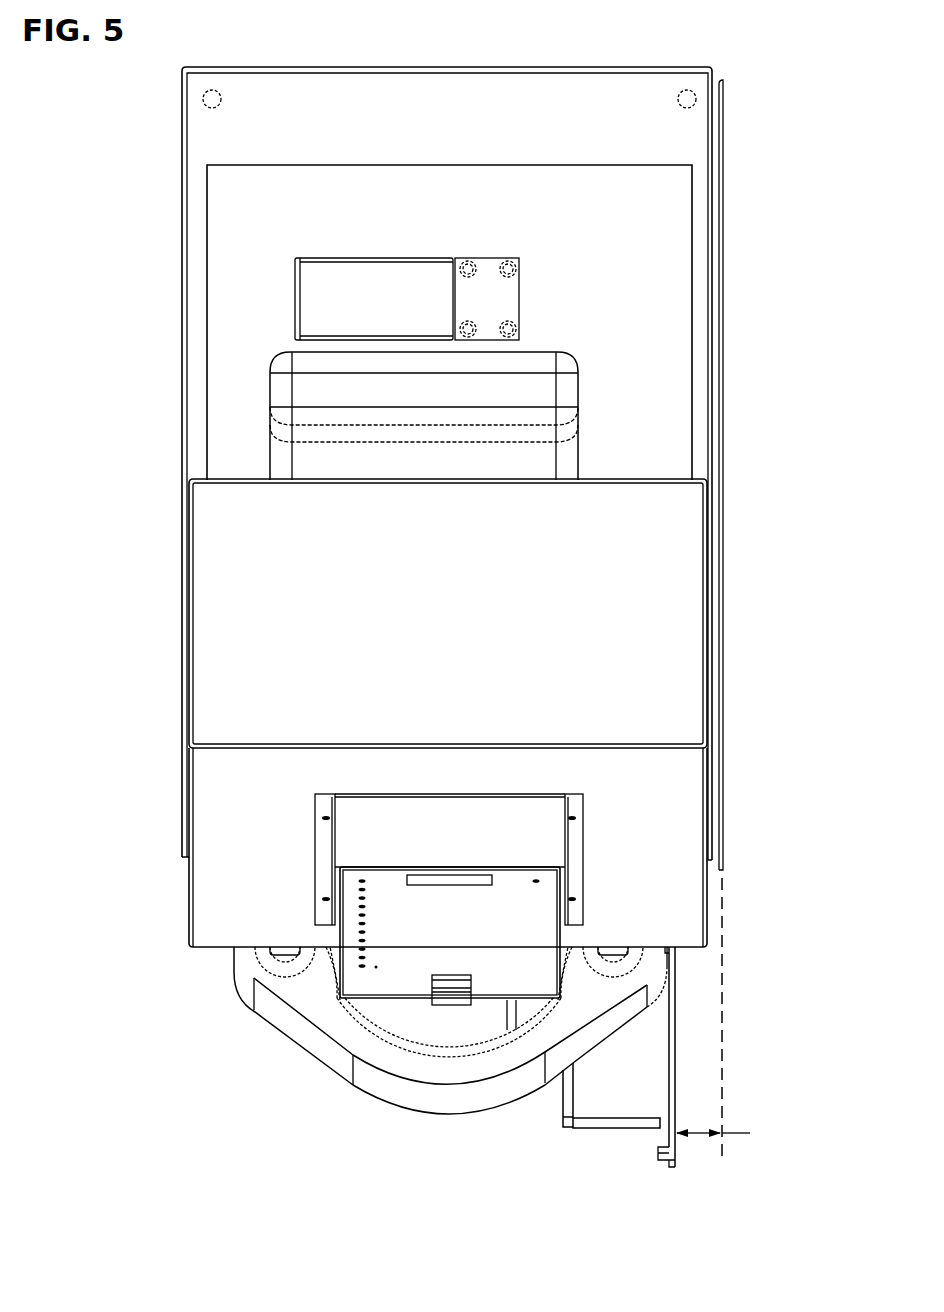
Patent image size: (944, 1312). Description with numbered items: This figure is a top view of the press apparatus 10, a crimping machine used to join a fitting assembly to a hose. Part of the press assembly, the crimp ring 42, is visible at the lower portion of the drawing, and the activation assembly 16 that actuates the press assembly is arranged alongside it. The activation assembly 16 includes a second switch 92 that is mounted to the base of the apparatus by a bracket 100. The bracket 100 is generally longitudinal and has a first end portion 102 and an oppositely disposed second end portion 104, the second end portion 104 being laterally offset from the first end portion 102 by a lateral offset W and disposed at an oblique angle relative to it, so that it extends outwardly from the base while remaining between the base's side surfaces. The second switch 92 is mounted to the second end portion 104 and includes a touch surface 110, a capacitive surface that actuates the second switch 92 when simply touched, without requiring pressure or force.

The press apparatus 10 is at (95, 215).
The activation assembly 16 is at (537, 1148).
The crimp ring 42 is at (302, 1043).
The second switch 92 is at (588, 1135).
The bracket 100 is at (739, 659).
The first end portion 102 is at (722, 574).
The second end portion 104 is at (675, 1040).
The touch surface 110 is at (560, 1092).